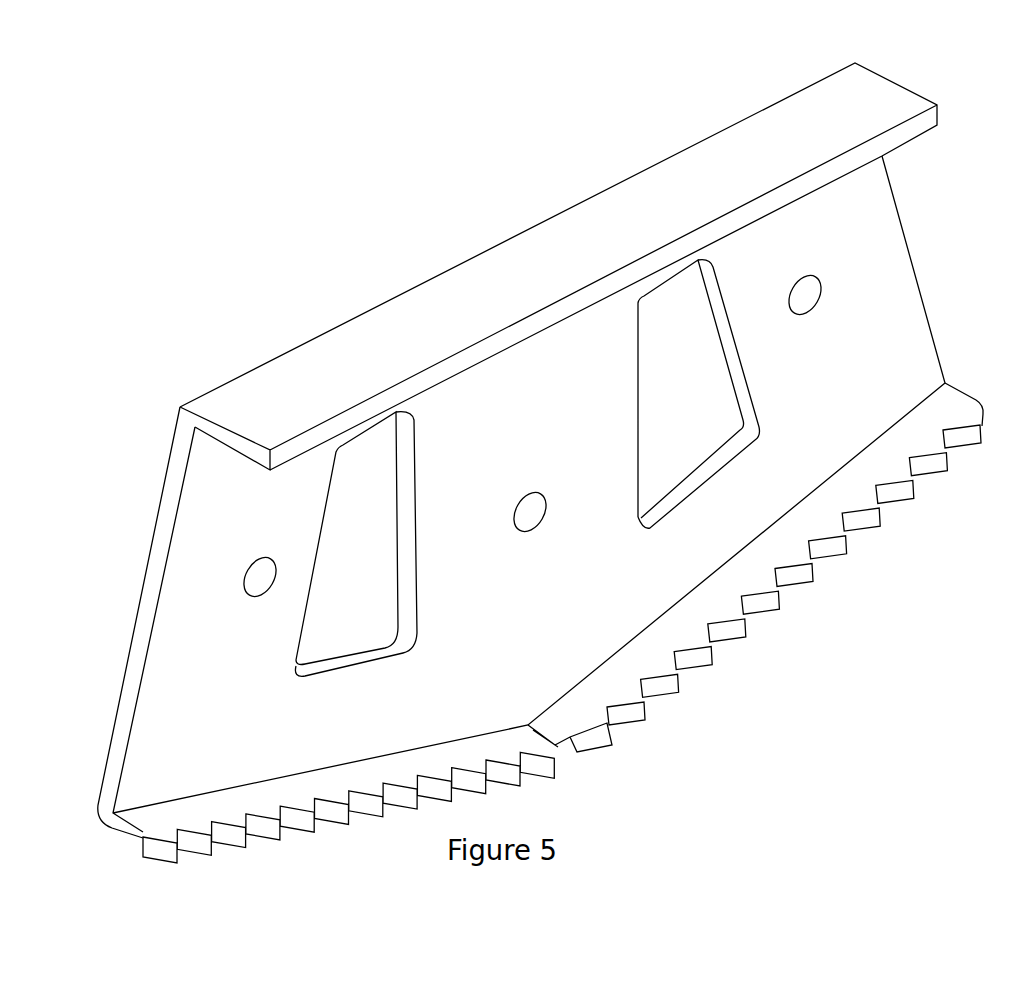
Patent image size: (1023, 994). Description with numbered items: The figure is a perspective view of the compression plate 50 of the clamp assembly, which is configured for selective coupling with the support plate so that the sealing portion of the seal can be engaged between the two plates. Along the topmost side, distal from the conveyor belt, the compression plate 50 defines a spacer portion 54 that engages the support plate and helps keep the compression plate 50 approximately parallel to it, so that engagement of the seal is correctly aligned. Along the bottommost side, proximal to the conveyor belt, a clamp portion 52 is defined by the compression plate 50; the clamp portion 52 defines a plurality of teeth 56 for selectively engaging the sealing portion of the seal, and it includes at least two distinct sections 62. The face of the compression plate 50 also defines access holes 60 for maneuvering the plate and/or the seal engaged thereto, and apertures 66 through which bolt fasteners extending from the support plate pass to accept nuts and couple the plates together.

The compression plate 50 is at (283, 151).
The clamp portion 52 is at (540, 497).
The spacer portion 54 is at (558, 266).
The teeth 56 is at (850, 557).
The access hole 60 is at (527, 468).
The sections 62 is at (611, 690).
The apertures 66 is at (815, 358).